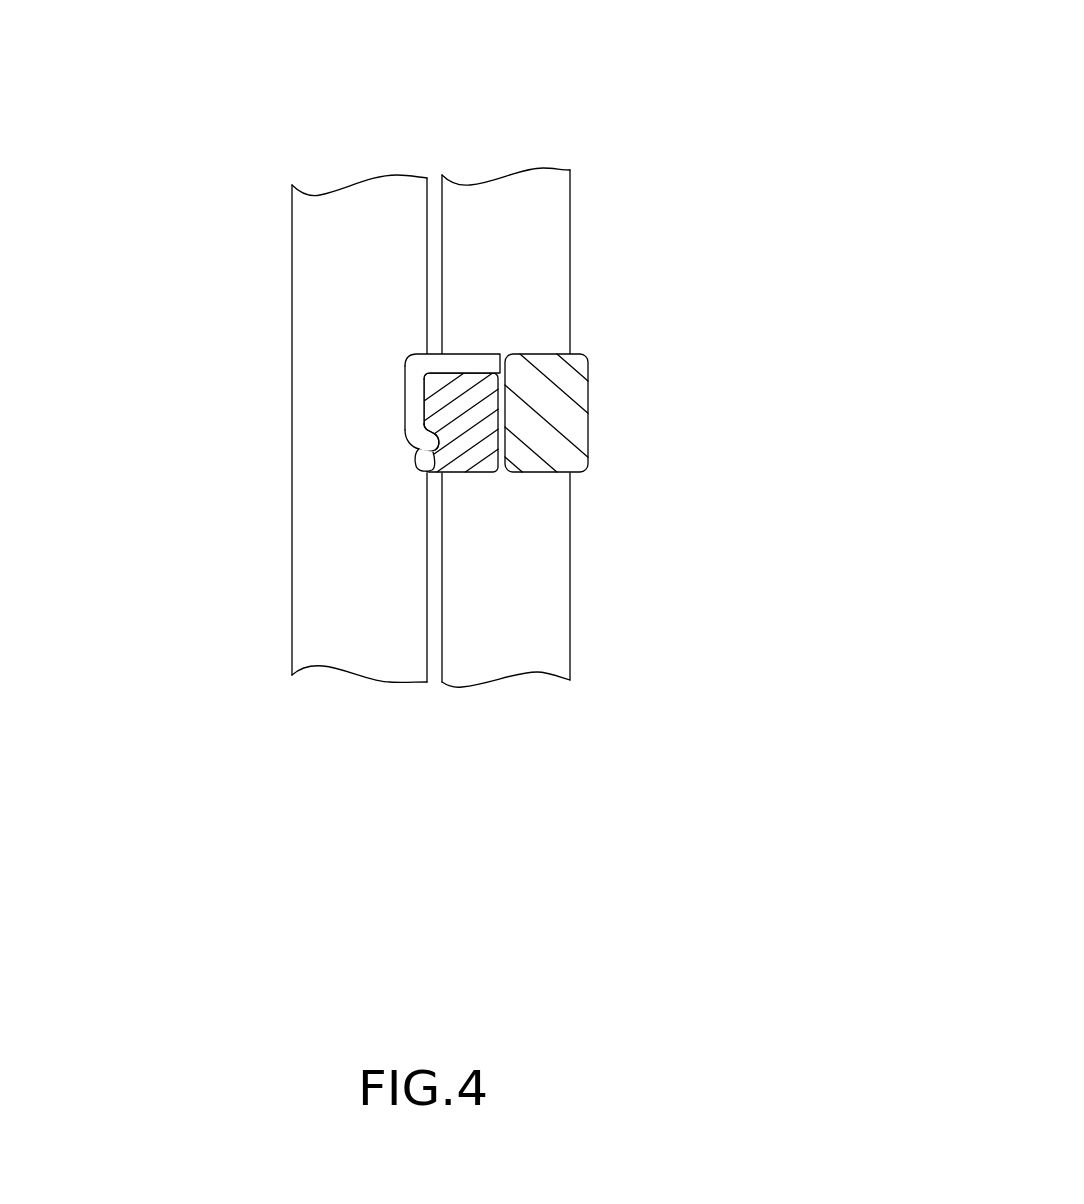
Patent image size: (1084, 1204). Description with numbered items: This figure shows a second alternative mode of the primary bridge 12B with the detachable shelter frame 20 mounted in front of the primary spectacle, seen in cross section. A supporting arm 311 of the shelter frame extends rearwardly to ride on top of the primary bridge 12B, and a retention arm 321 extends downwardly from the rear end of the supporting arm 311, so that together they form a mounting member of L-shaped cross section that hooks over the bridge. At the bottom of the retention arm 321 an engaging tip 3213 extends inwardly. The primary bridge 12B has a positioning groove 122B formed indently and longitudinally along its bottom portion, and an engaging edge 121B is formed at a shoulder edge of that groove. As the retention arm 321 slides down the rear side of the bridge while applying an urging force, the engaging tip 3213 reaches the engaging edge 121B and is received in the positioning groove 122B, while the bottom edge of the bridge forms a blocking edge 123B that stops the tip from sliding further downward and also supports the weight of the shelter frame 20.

The detachable shelter frame 20 is at (445, 419).
The supporting arm 311 is at (458, 362).
The retention arm 321 is at (410, 408).
The engaging tip 3213 is at (416, 443).
The engaging edge 121B is at (439, 427).
The positioning groove 122B is at (448, 443).
The primary bridge 12B is at (485, 455).
The blocking edge 123B is at (434, 470).